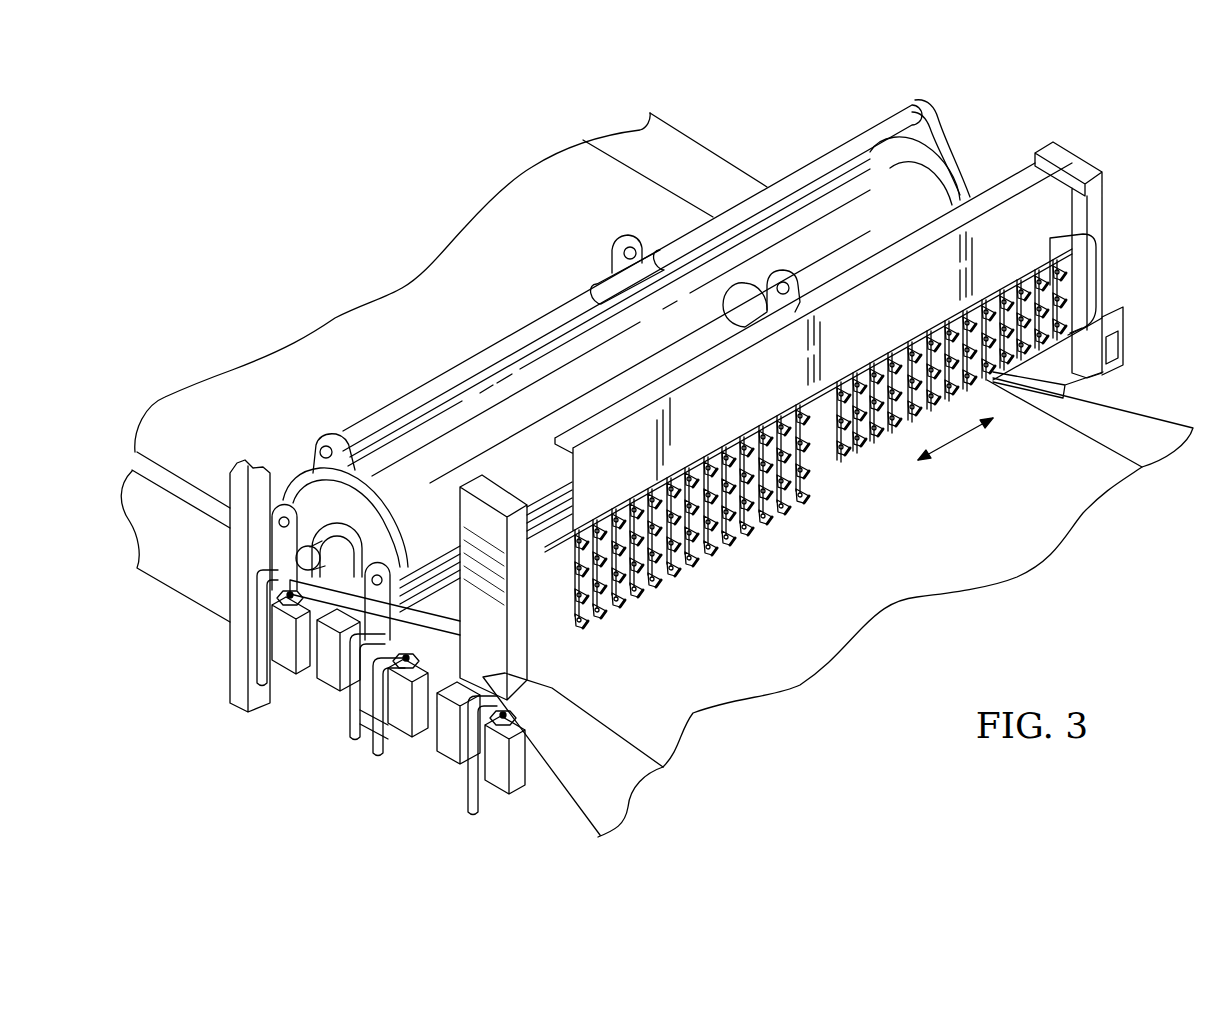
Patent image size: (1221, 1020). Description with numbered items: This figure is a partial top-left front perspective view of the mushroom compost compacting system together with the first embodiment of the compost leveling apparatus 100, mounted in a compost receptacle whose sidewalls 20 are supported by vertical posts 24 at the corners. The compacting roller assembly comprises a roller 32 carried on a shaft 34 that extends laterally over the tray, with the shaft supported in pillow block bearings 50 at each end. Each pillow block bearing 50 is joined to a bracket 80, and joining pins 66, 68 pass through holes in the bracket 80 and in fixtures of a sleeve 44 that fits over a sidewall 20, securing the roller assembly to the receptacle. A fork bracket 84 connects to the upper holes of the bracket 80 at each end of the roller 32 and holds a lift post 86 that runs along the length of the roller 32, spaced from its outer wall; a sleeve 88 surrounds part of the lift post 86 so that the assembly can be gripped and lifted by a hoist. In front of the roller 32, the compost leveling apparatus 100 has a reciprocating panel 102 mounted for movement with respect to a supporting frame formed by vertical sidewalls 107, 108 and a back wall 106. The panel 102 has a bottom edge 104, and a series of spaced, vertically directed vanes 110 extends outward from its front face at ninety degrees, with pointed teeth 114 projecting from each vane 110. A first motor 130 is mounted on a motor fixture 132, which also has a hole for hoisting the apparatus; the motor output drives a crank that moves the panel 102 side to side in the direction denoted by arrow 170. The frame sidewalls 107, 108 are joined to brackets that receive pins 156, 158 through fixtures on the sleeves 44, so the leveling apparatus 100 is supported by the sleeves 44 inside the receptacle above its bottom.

The sidewall 20 is at (572, 800).
The vertical post 24 is at (232, 648).
The roller 32 is at (902, 188).
The shaft 34 is at (285, 480).
The sleeve 44 is at (433, 718).
The pillow block bearing 50 is at (341, 532).
The joining pin 66 is at (260, 686).
The joining pin 68 is at (358, 735).
The bracket 80 is at (218, 465).
The fork bracket 84 is at (910, 98).
The lift post 86 is at (830, 163).
The sleeve 88 is at (598, 282).
The compost leveling apparatus 100 is at (1123, 135).
The reciprocating panel 102 is at (1080, 275).
The bottom edge 104 is at (1080, 328).
The back wall 106 is at (588, 422).
The sidewall 107 is at (480, 478).
The sidewall 108 is at (1070, 160).
The vane 110 is at (700, 548).
The pointed tooth 114 is at (633, 633).
The first motor 130 is at (744, 295).
The motor fixture 132 is at (785, 270).
The pin 156 is at (382, 748).
The pin 158 is at (473, 793).
The arrow 170 is at (953, 443).